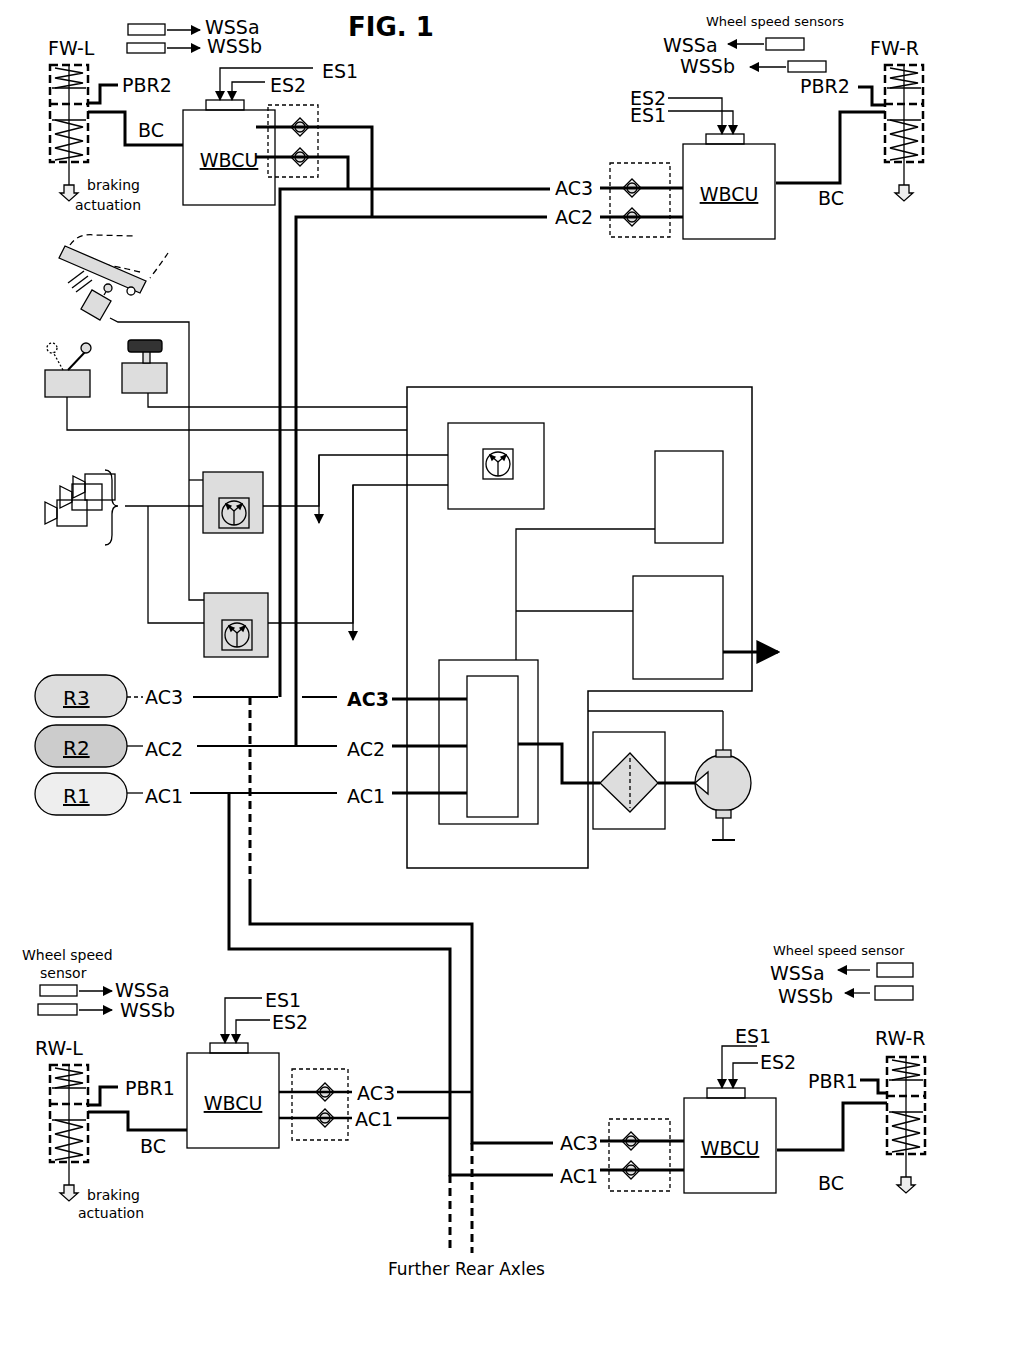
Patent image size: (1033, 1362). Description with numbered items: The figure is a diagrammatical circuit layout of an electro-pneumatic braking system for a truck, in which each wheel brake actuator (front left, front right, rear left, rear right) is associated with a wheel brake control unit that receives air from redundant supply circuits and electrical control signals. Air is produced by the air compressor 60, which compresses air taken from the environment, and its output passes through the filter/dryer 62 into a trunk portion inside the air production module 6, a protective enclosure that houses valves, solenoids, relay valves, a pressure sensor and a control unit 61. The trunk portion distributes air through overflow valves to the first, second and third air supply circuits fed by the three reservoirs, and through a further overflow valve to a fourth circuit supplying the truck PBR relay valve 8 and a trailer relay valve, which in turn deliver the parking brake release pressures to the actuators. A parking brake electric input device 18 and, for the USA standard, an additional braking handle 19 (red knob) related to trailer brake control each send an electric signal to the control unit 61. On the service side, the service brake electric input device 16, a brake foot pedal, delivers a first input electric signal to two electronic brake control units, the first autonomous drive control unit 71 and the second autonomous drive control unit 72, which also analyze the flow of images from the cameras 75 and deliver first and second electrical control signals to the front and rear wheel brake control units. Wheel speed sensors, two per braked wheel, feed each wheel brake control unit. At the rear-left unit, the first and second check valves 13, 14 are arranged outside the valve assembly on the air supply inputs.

The air production module 6 is at (659, 616).
The truck PBR relay valve 8 is at (631, 634).
The first check valve 13 is at (322, 1126).
The second check valve 14 is at (331, 1084).
The service brake electric input device 16 is at (82, 305).
The parking brake electric input device 18 is at (45, 385).
The additional braking handle 19 is at (122, 373).
The air compressor 60 is at (752, 770).
The control unit 61 is at (518, 423).
The filter/dryer 62 is at (645, 800).
The first autonomous drive control unit 71 is at (315, 490).
The second autonomous drive control unit 72 is at (311, 567).
The cameras 75 is at (72, 530).